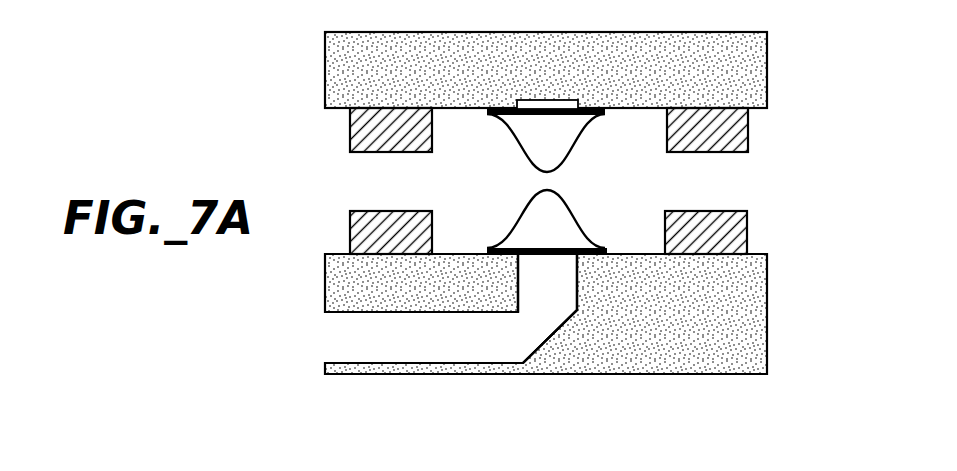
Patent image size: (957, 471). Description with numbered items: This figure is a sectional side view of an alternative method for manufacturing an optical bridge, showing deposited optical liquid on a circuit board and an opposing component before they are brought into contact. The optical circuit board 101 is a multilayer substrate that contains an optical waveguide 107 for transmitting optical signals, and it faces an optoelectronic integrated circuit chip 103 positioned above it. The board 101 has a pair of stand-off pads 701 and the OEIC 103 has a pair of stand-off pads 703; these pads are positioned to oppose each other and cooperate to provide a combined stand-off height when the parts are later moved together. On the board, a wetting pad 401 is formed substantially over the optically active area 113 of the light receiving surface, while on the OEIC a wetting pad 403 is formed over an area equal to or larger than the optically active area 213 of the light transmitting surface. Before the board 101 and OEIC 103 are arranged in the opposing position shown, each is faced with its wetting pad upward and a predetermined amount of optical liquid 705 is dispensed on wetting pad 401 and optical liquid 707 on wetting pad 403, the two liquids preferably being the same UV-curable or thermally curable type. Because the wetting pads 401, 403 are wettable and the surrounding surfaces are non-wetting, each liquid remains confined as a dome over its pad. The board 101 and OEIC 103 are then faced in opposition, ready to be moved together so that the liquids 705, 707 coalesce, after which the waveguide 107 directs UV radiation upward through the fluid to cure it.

The optical circuit board 101 is at (778, 330).
The optoelectronic integrated circuit chip 103 is at (718, 32).
The optical waveguide 107 is at (325, 350).
The optically active area 113 is at (550, 254).
The optically active area 213 is at (578, 100).
The wetting pad 401 is at (607, 250).
The wetting pad 403 is at (483, 113).
The stand-off pads 701 is at (350, 228).
The stand-off pads 703 is at (350, 140).
The optical liquid 705 is at (540, 206).
The optical liquid 707 is at (550, 145).